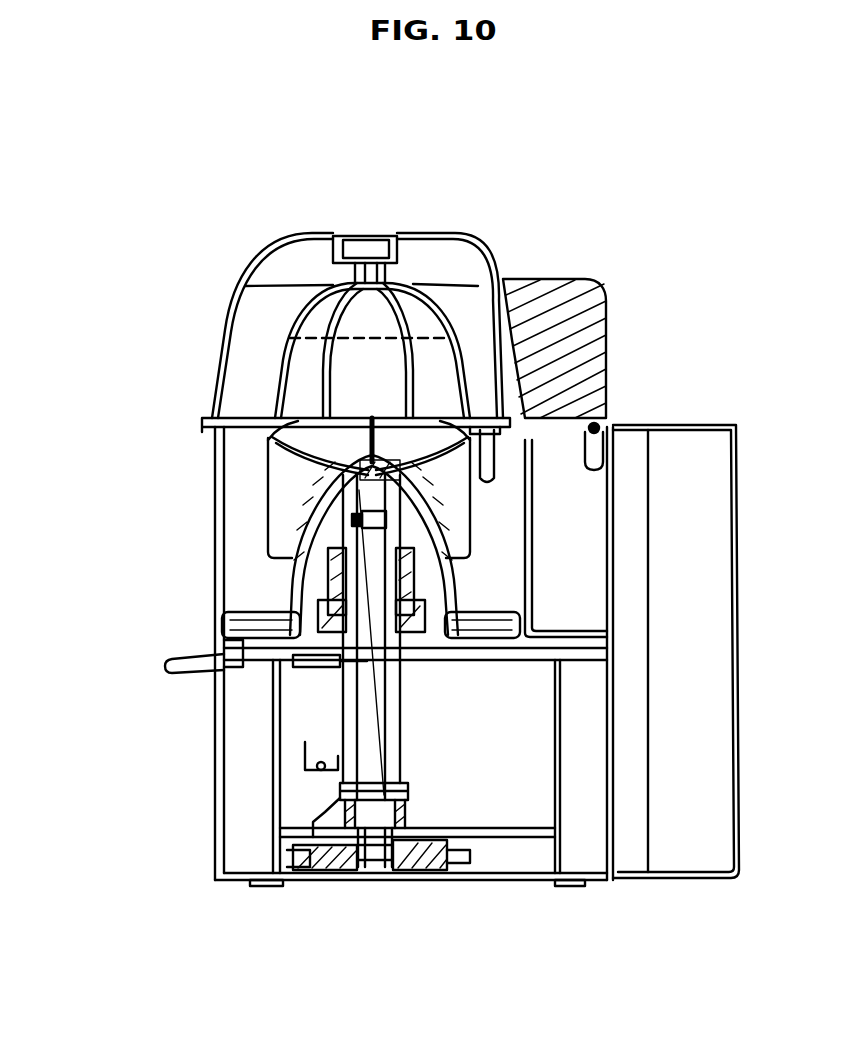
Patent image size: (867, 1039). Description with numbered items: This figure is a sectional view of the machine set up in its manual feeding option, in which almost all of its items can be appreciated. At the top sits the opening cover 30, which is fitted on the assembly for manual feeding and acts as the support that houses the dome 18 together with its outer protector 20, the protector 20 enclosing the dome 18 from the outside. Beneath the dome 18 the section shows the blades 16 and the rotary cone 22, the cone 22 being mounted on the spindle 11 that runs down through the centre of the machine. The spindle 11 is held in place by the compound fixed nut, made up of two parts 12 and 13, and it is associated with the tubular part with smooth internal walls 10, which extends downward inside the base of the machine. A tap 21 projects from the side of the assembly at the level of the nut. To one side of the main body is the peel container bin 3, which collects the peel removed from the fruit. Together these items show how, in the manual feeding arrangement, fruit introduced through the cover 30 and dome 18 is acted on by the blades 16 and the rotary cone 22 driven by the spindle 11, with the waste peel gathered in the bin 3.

The peel container bin 3 is at (687, 440).
The tubular part with smooth internal walls 10 is at (370, 690).
The spindle 11 is at (367, 667).
The compound fixed nut 12 is at (330, 577).
The compound fixed nut 13 is at (347, 542).
The blades 16 is at (290, 478).
The dome 18 is at (300, 355).
The protector 20 is at (245, 312).
The tap 21 is at (164, 670).
The rotary cone 22 is at (350, 517).
The opening cover 30 is at (600, 338).